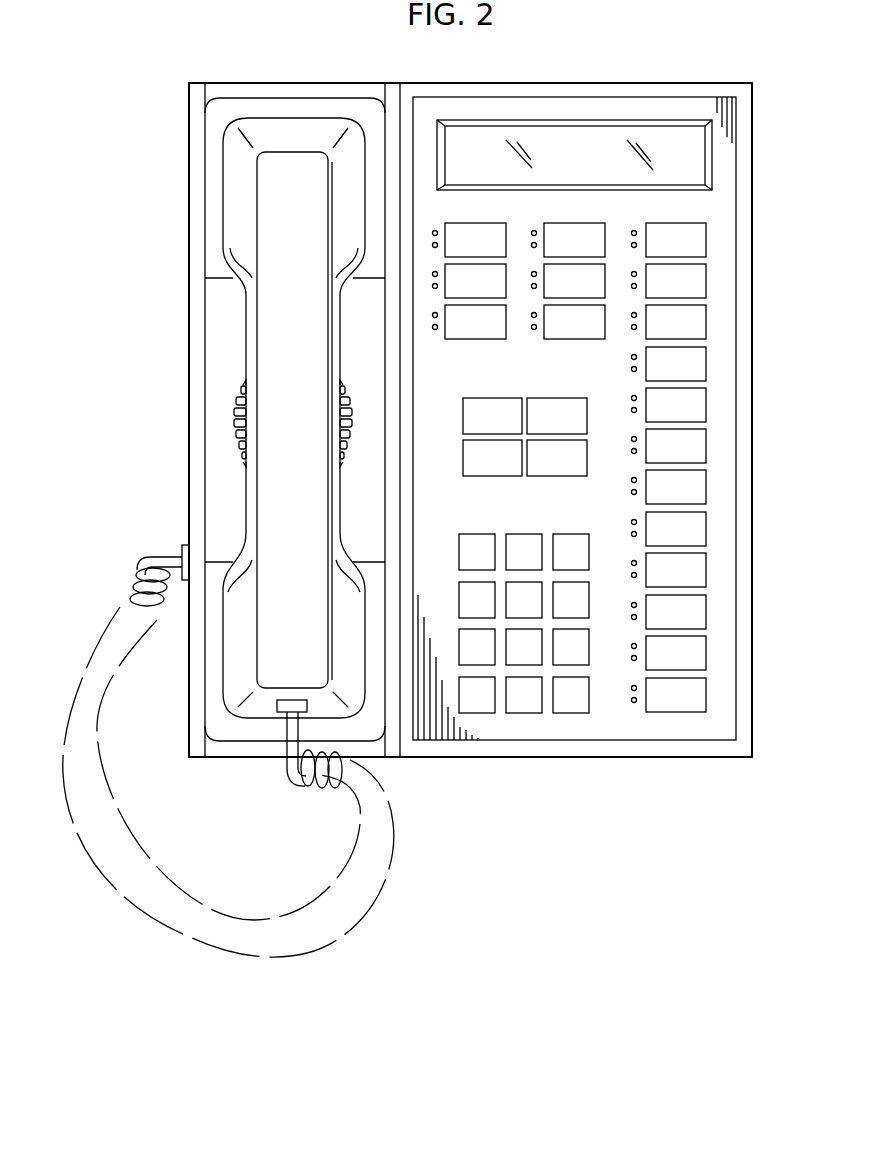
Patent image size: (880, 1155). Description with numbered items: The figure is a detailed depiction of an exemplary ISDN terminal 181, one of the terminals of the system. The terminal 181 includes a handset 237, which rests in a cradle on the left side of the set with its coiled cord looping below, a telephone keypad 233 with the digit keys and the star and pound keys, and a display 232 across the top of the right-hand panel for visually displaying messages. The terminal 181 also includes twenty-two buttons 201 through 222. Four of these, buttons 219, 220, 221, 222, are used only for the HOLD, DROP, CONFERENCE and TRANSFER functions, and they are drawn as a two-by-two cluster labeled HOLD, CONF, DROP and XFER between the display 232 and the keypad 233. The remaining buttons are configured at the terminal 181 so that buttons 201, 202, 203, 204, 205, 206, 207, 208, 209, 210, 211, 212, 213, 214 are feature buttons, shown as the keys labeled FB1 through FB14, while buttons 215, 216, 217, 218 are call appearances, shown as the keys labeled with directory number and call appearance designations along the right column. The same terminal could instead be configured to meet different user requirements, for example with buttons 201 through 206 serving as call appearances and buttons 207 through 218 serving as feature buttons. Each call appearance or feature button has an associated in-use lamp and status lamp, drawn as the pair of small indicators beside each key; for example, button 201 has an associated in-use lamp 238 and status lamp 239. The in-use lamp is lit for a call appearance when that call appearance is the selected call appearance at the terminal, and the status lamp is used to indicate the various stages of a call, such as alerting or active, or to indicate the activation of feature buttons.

The ISDN terminal 181 is at (471, 83).
The display 232 is at (565, 150).
The in-use lamp 238 is at (437, 233).
The status lamp 239 is at (433, 245).
The button 201 is at (465, 222).
The button 202 is at (506, 268).
The button 203 is at (470, 340).
The button 204 is at (590, 222).
The button 205 is at (544, 294).
The button 206 is at (592, 340).
The button 207 is at (706, 240).
The button 208 is at (706, 281).
The button 209 is at (706, 322).
The button 210 is at (706, 364).
The button 211 is at (706, 405).
The button 212 is at (706, 446).
The button 213 is at (706, 487).
The button 214 is at (706, 529).
The button 215 is at (706, 570).
The button 216 is at (706, 612).
The button 217 is at (706, 653).
The button 218 is at (706, 695).
The button 219 is at (492, 398).
The button 220 is at (492, 476).
The button 221 is at (557, 398).
The button 222 is at (558, 476).
The telephone keypad 233 is at (527, 724).
The handset 237 is at (296, 365).